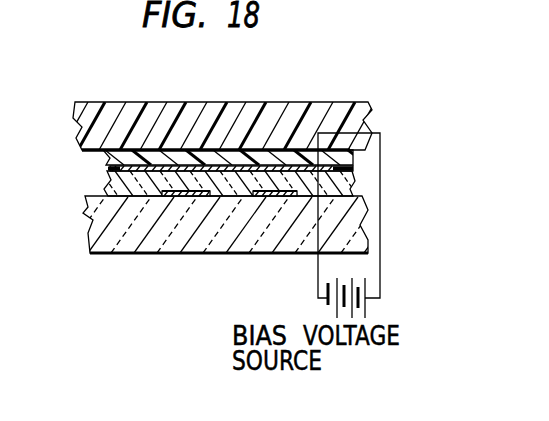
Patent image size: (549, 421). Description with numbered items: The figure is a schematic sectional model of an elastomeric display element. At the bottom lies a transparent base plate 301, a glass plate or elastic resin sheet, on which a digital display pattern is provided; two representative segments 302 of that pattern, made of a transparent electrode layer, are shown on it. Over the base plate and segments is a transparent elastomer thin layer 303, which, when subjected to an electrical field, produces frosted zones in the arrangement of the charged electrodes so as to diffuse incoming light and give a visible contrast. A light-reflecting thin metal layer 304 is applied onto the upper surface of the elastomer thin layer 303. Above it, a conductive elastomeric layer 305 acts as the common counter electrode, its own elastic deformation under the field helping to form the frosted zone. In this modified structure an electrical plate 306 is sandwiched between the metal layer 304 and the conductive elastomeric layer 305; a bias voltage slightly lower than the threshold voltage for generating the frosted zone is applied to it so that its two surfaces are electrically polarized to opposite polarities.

The transparent base plate 301 is at (91, 227).
The segments 302 is at (262, 197).
The transparent elastomer thin layer 303 is at (107, 186).
The light-reflecting thin metal layer 304 is at (110, 167).
The conductive elastomeric layer 305 is at (226, 102).
The electrical plate 306 is at (132, 152).